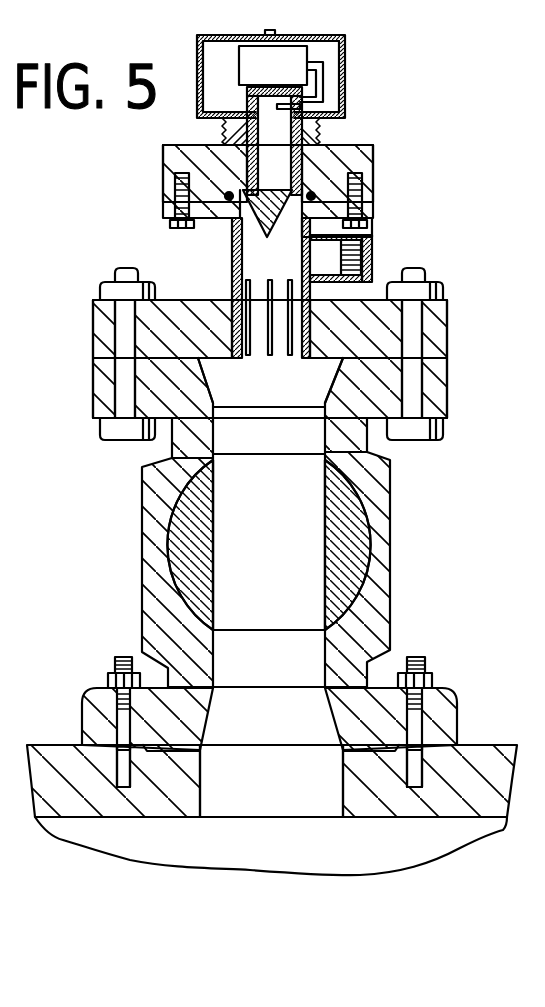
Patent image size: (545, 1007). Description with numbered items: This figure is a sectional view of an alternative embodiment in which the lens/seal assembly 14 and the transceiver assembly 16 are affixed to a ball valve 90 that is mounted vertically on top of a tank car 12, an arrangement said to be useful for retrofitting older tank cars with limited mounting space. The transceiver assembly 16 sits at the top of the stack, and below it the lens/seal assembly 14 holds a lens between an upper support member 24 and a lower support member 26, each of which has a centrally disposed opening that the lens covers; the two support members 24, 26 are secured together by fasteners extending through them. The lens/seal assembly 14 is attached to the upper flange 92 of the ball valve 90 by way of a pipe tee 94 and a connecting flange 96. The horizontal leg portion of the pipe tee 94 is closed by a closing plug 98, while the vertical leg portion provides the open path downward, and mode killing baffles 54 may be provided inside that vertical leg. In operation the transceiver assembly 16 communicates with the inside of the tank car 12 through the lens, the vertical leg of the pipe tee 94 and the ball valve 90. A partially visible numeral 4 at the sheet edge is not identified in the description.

The tank car 12 is at (468, 830).
The lens/seal assembly 14 is at (374, 155).
The transceiver assembly 16 is at (347, 87).
The upper support member 24 is at (360, 182).
The lower support member 26 is at (375, 208).
The mode killing baffles 54 is at (246, 292).
The ball valve 90 is at (373, 568).
The upper flange 92 is at (390, 388).
The pipe tee 94 is at (312, 260).
The connecting flange 96 is at (378, 335).
The closing plug 98 is at (375, 272).
The partial numeral 4 is at (0, 548).